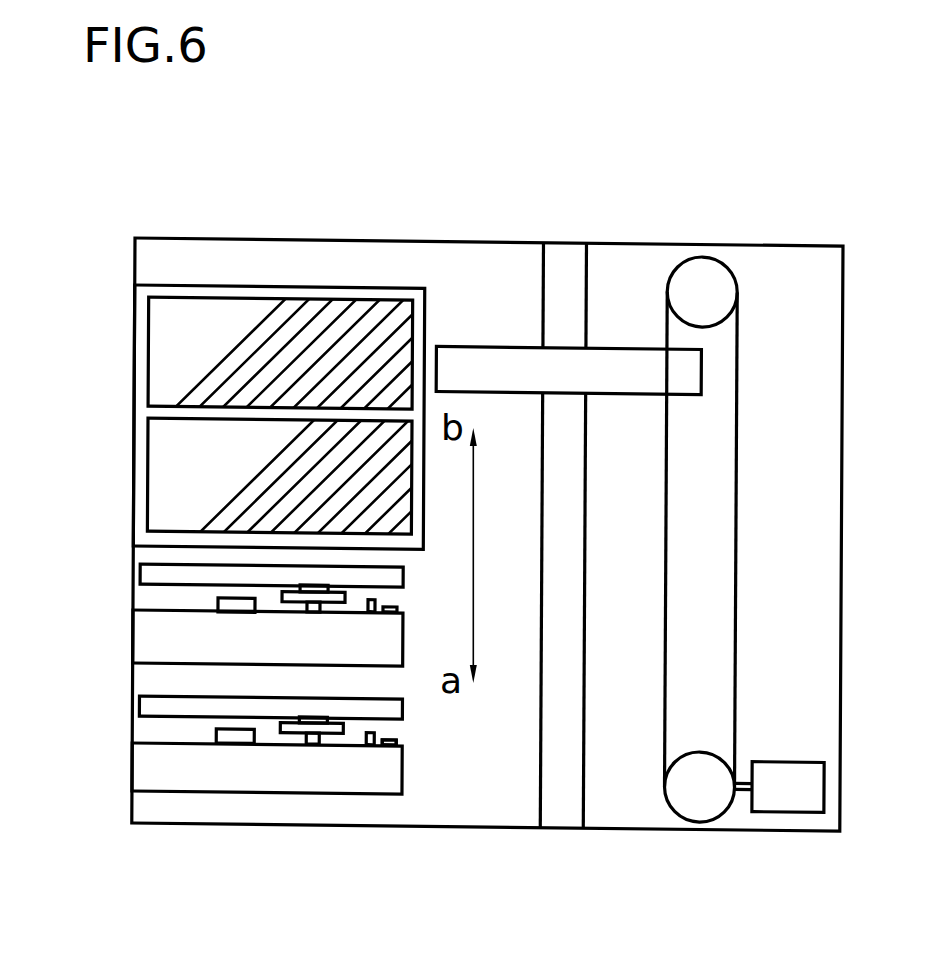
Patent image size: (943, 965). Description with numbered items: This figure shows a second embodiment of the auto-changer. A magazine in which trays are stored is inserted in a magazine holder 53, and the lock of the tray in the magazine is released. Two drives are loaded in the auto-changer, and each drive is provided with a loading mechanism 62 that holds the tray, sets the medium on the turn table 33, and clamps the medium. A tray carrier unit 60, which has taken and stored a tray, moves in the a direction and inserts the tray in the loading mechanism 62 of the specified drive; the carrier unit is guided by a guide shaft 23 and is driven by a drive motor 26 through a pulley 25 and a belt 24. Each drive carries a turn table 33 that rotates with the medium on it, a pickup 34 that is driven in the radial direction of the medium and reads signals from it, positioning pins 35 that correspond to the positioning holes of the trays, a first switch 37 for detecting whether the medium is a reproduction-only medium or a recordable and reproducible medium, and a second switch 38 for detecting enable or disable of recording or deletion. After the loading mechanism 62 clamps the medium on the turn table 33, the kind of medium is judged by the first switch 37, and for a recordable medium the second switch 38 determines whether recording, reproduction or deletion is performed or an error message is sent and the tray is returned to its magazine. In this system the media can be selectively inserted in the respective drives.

The guide shaft 23 is at (567, 268).
The belt 24 is at (738, 343).
The pulley 25 is at (703, 275).
The drive motor 26 is at (793, 813).
The turn table 33 is at (288, 745).
The pickup 34 is at (230, 745).
The positioning pins 35 is at (370, 745).
The first switch 37 is at (393, 747).
The second switch 38 is at (389, 742).
The magazine holder 53 is at (304, 292).
The tray carrier unit 60 is at (462, 362).
The loading mechanism 62 is at (142, 708).